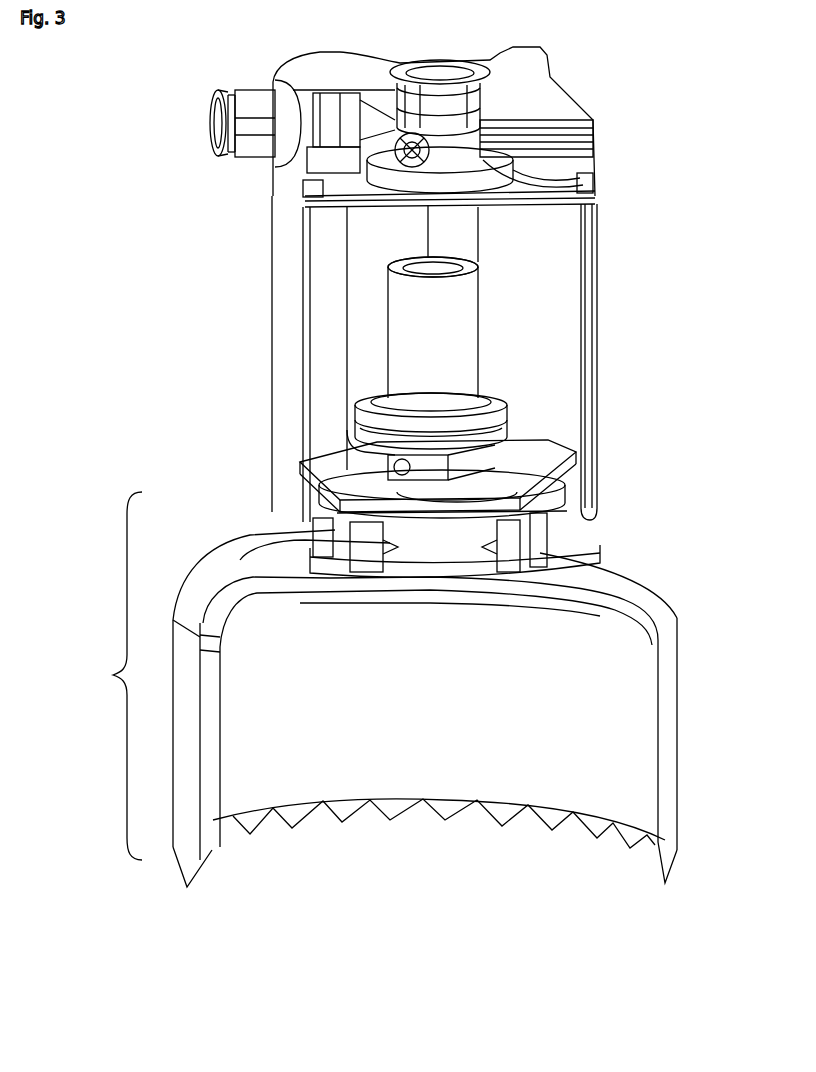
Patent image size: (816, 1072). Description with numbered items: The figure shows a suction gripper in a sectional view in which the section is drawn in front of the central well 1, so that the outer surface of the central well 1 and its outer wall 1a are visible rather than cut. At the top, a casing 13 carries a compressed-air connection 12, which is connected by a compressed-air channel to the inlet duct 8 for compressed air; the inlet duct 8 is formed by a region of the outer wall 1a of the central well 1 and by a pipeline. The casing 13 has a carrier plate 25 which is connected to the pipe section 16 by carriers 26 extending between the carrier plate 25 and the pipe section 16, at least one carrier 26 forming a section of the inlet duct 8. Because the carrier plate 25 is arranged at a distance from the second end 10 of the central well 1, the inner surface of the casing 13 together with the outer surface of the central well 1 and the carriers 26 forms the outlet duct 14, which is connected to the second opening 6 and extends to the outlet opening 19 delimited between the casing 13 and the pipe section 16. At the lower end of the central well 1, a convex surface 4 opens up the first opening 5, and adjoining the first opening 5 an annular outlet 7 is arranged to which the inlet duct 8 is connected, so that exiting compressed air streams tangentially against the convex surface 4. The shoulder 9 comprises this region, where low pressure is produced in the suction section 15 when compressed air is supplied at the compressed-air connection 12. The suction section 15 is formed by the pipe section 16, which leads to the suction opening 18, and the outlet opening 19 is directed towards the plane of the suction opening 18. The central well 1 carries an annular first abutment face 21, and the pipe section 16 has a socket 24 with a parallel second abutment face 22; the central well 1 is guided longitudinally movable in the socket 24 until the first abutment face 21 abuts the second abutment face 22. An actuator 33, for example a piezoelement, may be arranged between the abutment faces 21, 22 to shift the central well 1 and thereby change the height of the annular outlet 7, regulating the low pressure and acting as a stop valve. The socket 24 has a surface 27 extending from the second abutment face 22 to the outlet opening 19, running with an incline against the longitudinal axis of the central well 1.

The central well 1 is at (482, 309).
The outer wall 1a is at (430, 320).
The convex surface 4 is at (386, 491).
The first opening 5 is at (432, 596).
The second opening 6 is at (482, 263).
The annular outlet 7 is at (440, 505).
The inlet duct 8 is at (320, 268).
The shoulder 9 is at (482, 492).
The second end 10 is at (433, 267).
The compressed-air connection 12 is at (232, 86).
The casing 13 is at (597, 497).
The outlet duct 14 is at (540, 356).
The suction section 15 is at (378, 689).
The pipe section 16 is at (310, 537).
The suction opening 18 is at (550, 868).
The outlet opening 19 is at (584, 513).
The first abutment face 21 is at (512, 430).
The second abutment face 22 is at (520, 430).
The socket 24 is at (347, 461).
The carrier plate 25 is at (588, 200).
The carriers 26 is at (440, 223).
The surface 27 is at (550, 450).
The actuator 33 is at (347, 432).